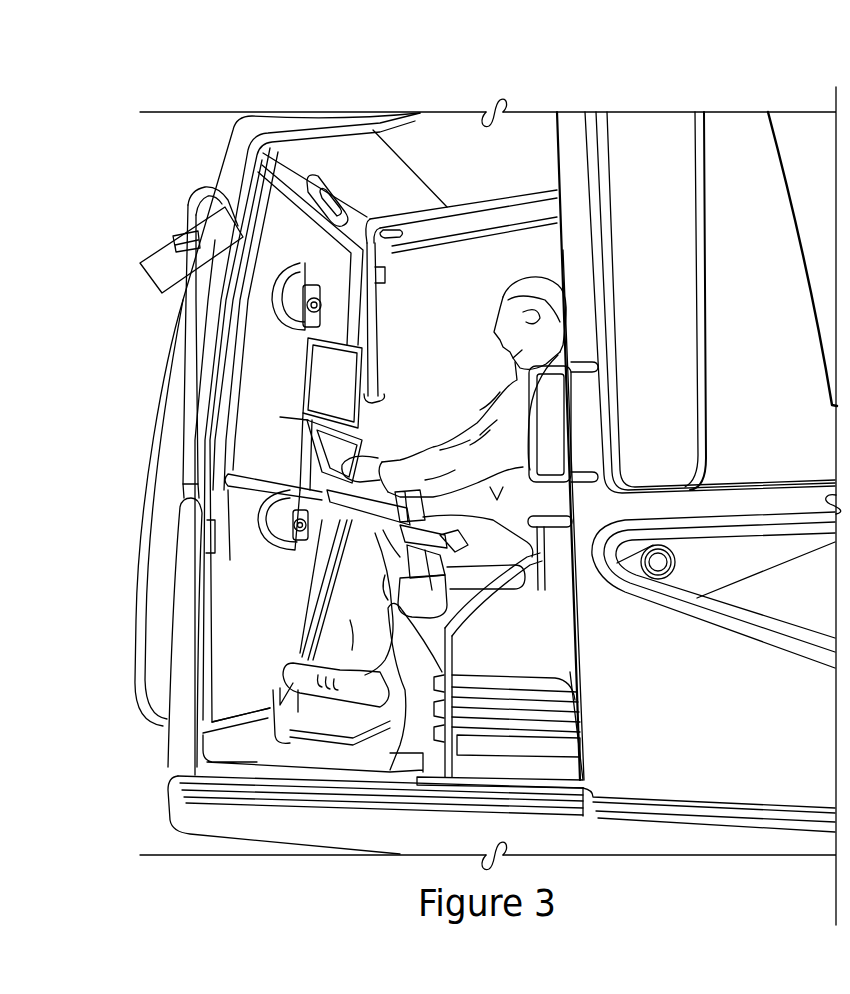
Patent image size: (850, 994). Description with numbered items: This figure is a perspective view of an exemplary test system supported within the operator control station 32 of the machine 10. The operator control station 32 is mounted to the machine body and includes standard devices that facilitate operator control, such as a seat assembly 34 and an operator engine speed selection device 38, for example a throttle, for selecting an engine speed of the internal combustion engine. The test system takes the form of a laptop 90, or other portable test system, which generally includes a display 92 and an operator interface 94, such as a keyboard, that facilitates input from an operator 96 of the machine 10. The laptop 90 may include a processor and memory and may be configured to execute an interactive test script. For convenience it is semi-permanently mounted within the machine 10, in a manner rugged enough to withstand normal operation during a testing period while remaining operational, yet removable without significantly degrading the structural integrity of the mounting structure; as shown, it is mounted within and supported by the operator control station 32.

The machine 10 is at (750, 68).
The operator control station 32 is at (293, 120).
The seat assembly 34 is at (503, 643).
The operator engine speed selection device 38 is at (517, 590).
The laptop 90 is at (300, 427).
The display 92 is at (327, 360).
The operator interface 94 is at (307, 443).
The operator 96 is at (558, 405).